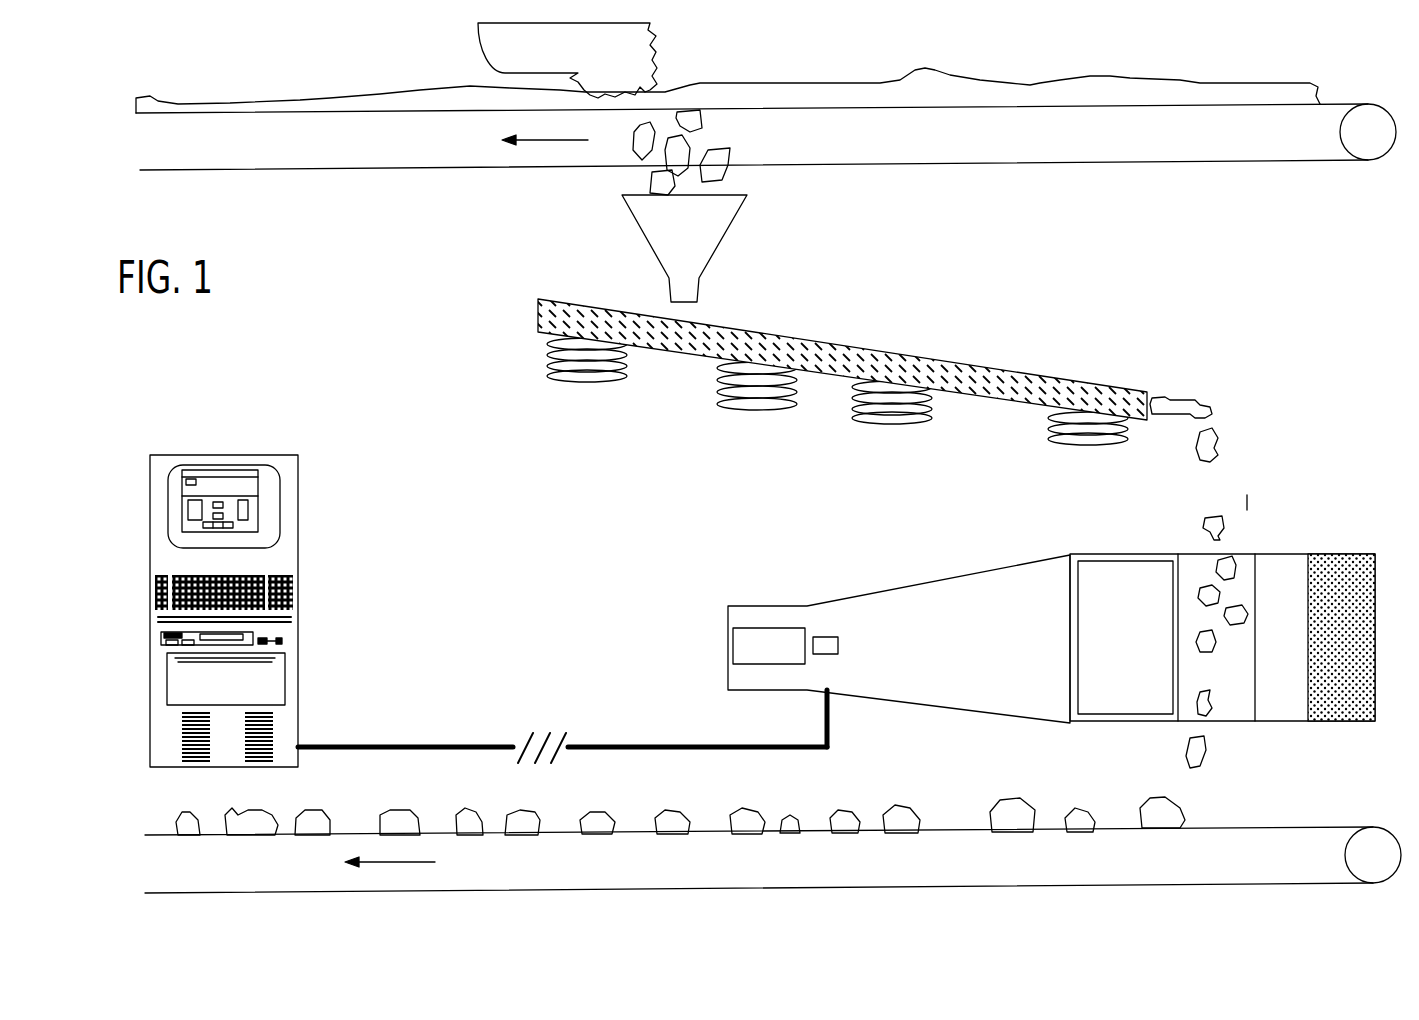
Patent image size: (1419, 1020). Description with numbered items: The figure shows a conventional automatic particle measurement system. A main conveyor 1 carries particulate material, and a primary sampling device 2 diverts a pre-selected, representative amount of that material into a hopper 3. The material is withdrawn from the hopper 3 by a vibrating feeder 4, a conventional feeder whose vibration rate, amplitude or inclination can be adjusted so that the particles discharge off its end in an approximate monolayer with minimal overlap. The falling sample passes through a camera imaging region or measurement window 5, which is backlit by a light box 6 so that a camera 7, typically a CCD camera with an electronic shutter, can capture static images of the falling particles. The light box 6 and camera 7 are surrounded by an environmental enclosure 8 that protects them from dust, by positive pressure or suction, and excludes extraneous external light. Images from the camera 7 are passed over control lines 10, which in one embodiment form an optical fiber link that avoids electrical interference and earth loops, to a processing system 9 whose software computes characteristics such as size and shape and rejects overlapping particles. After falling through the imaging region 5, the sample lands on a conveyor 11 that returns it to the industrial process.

The main conveyor 1 is at (766, 131).
The primary sampling device 2 is at (624, 60).
The hopper 3 is at (722, 248).
The vibrating feeder 4 is at (878, 380).
The camera imaging region 5 is at (1217, 642).
The light box 6 is at (1222, 605).
The camera 7 is at (734, 646).
The environmental enclosure 8 is at (1053, 558).
The processing system 9 is at (266, 593).
The control lines 10 is at (562, 726).
The return conveyor to the process 11 is at (773, 845).